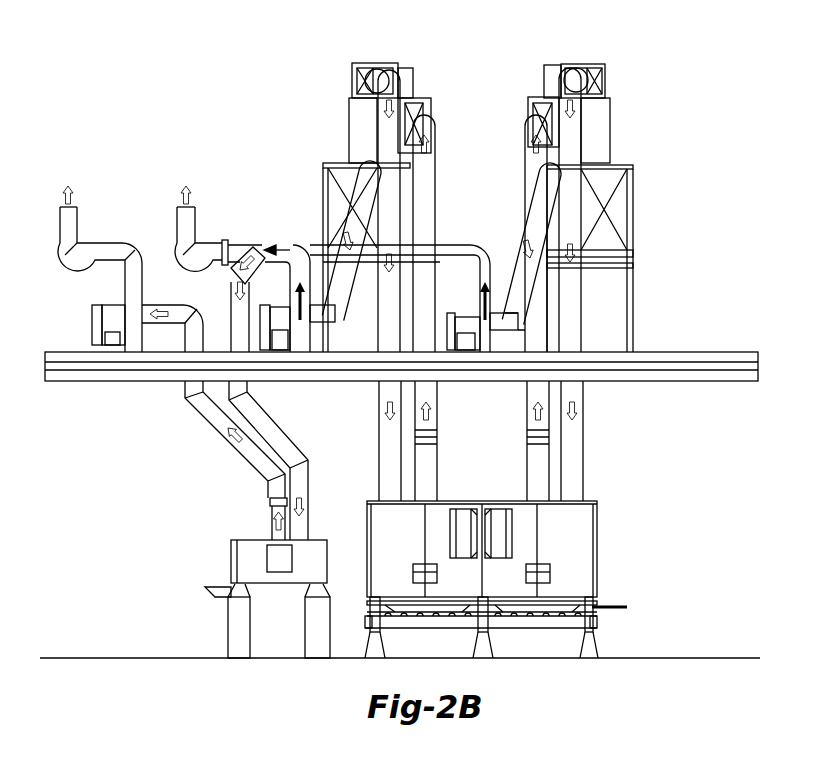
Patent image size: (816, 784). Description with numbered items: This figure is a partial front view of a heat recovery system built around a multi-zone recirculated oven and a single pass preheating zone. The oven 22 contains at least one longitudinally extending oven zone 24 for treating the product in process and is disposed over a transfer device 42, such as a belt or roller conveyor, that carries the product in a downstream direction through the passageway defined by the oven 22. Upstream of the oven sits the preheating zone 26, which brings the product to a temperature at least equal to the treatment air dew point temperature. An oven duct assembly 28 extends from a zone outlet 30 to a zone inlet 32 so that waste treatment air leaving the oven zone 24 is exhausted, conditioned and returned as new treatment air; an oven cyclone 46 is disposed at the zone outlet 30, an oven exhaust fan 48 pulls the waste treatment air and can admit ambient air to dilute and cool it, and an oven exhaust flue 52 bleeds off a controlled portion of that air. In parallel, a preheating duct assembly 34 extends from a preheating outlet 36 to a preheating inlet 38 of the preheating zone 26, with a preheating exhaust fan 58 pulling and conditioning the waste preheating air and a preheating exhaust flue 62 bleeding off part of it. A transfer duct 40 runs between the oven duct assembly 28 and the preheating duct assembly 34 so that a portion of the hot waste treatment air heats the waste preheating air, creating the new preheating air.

The oven 22 is at (598, 528).
The oven zone 24 is at (402, 547).
The preheating zone 26 is at (327, 540).
The oven duct assembly 28 is at (435, 163).
The zone outlet 30 is at (523, 494).
The zone inlet 32 is at (380, 497).
The preheating duct assembly 34 is at (205, 419).
The preheating outlet 36 is at (272, 539).
The preheating inlet 38 is at (312, 538).
The transfer duct 40 is at (350, 234).
The transfer device 42 is at (617, 607).
The oven cyclone 46 is at (362, 125).
The oven exhaust fan 48 is at (401, 81).
The oven exhaust flue 52 is at (195, 221).
The preheating exhaust fan 58 is at (92, 327).
The preheating exhaust flue 62 is at (77, 221).